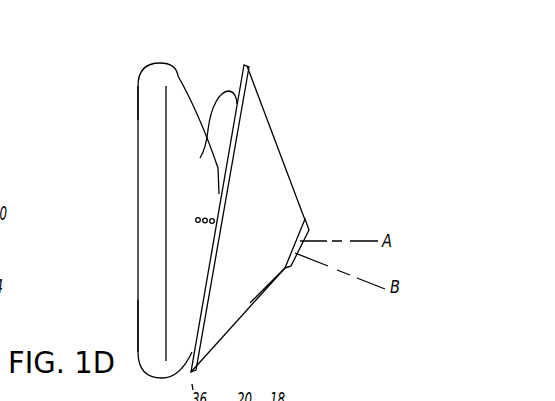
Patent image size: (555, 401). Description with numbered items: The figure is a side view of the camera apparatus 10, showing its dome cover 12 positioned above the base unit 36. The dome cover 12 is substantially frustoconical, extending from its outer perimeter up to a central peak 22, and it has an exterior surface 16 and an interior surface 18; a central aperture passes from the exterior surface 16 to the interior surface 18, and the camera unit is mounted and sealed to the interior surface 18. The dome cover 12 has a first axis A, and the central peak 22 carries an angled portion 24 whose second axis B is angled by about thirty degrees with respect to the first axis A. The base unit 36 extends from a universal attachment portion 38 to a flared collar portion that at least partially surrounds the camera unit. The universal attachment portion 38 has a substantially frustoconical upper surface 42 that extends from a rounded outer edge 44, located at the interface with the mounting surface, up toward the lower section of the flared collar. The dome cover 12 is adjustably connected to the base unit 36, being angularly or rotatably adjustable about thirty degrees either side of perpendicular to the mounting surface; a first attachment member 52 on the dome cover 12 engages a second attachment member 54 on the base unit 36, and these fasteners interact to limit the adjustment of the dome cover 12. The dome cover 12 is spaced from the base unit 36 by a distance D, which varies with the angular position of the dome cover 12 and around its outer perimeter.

The camera apparatus 10 is at (348, 110).
The dome cover 12 is at (262, 118).
The exterior surface 16 is at (260, 165).
The interior surface 18 is at (200, 158).
The central peak 22 is at (307, 229).
The angled portion 24 is at (287, 265).
The base unit 36 is at (153, 72).
The universal attachment portion 38 is at (137, 325).
The upper surface 42 is at (188, 140).
The rounded outer edge 44 is at (150, 168).
The first attachment member 52 is at (280, 232).
The second attachment member 54 is at (200, 228).
The distance D is at (240, 75).